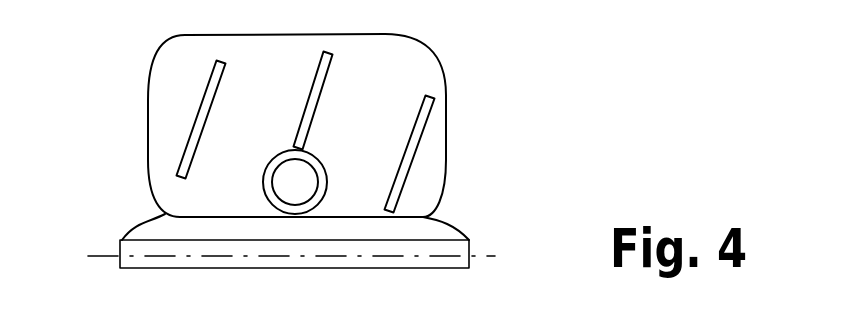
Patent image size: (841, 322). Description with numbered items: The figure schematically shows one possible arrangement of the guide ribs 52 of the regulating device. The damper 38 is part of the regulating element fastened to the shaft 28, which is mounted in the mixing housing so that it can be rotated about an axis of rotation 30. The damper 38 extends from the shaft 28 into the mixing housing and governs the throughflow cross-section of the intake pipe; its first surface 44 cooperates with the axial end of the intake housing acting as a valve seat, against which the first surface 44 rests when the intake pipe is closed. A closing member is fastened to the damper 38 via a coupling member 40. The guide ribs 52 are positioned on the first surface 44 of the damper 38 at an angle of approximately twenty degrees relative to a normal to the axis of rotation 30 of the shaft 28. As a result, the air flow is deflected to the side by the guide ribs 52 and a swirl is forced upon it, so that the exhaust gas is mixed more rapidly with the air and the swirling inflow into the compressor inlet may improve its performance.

The shaft 28 is at (130, 241).
The axis of rotation 30 is at (468, 256).
The damper 38 is at (341, 123).
The coupling member 40 is at (298, 188).
The first surface 44 is at (397, 92).
The guide ribs 52 is at (207, 102).